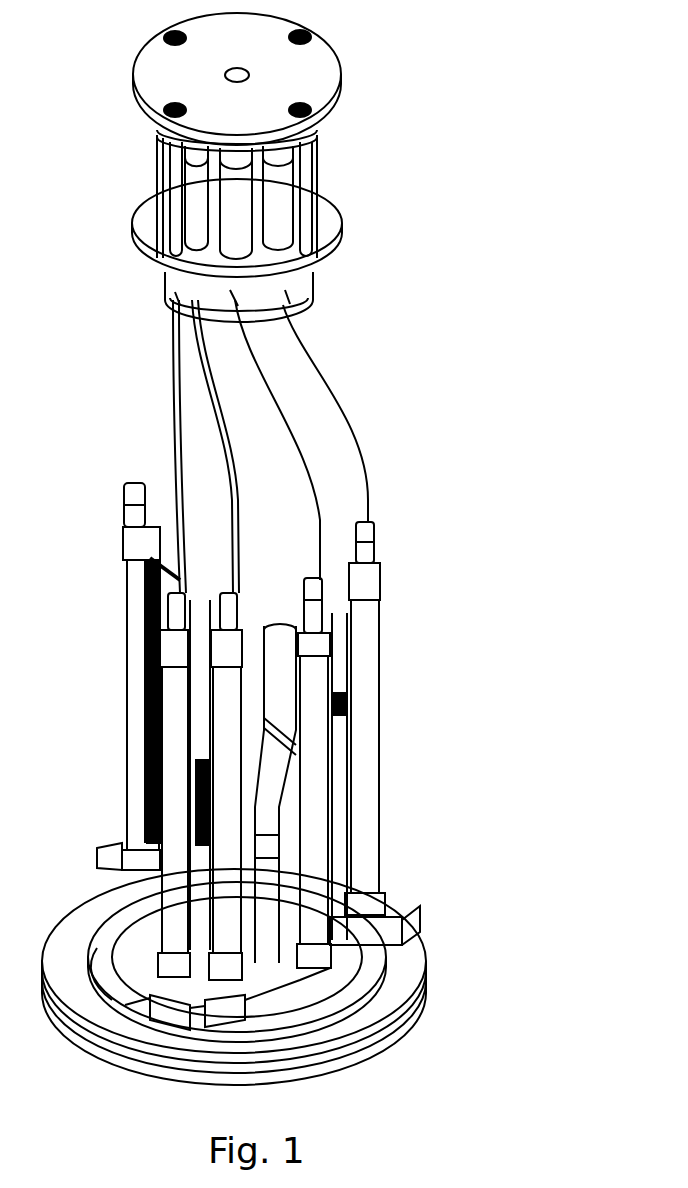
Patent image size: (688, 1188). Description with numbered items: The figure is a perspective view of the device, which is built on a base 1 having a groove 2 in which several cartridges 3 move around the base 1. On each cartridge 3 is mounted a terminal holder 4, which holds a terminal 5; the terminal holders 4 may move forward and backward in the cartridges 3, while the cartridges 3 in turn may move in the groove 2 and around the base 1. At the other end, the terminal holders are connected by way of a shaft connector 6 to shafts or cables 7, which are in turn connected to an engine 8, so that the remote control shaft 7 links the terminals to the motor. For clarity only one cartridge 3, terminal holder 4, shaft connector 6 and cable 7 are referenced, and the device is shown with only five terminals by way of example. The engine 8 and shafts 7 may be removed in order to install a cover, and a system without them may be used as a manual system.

The base 1 is at (408, 1016).
The groove 2 is at (395, 949).
The cartridge 3 is at (190, 1025).
The terminal holder 4 is at (382, 904).
The terminal 5 is at (372, 750).
The shaft connector 6 is at (385, 525).
The shaft (cable) 7 is at (333, 393).
The engine 8 is at (322, 170).